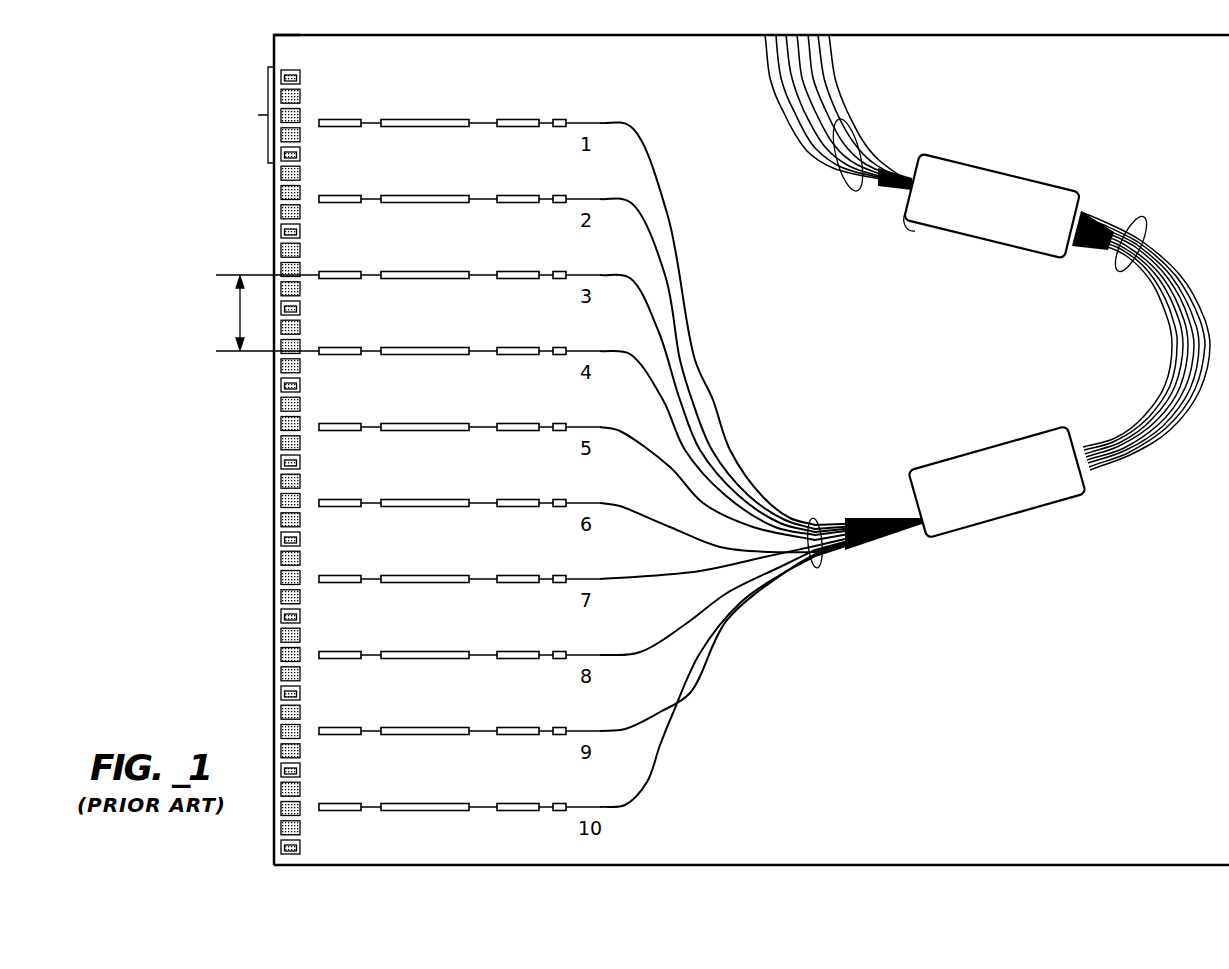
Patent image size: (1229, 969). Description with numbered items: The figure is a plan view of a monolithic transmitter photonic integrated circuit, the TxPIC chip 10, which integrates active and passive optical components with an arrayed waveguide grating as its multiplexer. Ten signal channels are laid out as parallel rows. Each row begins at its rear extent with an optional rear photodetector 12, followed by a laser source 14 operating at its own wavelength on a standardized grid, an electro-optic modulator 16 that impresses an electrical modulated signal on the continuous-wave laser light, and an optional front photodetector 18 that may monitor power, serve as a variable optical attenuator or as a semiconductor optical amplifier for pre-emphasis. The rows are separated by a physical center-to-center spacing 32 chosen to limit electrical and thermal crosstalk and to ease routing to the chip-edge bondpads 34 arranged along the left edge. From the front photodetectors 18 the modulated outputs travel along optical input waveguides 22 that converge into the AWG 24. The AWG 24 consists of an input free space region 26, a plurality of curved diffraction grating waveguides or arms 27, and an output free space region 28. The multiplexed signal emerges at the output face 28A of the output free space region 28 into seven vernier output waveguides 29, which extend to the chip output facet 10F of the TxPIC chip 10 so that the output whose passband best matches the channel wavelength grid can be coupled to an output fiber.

The TxPIC chip 10 is at (716, 447).
The chip output facet 10F is at (273, 30).
The rear photodetectors 12 is at (344, 119).
The laser sources 14 is at (420, 119).
The electro-optic modulators 16 is at (507, 119).
The front photodetectors 18 is at (572, 119).
The optical input waveguides 22 is at (817, 567).
The arrayed waveguide grating 24 is at (1120, 188).
The input free space region 26 is at (997, 482).
The diffraction grating waveguides 27 is at (1142, 228).
The output free space region 28 is at (992, 210).
The output face 28A is at (912, 232).
The output waveguides 29 is at (836, 187).
The center-to-center spacing 32 is at (240, 312).
The bondpads 34 is at (267, 115).